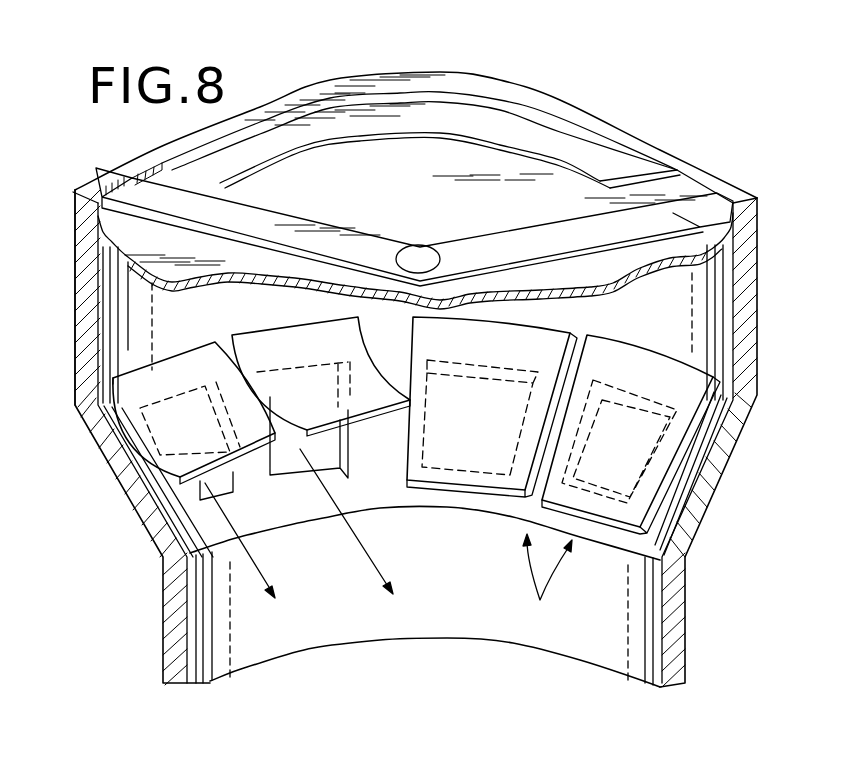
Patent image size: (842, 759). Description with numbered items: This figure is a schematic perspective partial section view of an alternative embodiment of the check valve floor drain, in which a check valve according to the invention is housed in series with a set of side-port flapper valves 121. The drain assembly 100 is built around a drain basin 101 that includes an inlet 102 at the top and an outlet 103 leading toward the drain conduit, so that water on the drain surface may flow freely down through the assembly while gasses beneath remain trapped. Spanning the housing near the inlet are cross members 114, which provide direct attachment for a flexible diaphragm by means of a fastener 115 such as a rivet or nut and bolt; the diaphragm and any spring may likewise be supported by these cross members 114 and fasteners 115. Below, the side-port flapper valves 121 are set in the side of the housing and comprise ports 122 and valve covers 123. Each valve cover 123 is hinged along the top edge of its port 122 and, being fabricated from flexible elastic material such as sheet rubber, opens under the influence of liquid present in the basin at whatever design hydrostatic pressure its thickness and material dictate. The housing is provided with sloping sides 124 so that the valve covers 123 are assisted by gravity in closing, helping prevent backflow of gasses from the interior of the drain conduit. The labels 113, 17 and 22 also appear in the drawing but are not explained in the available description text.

The drain assembly 100 is at (410, 367).
The drain basin 101 is at (74, 262).
The inlet 102 is at (590, 183).
The outlet 103 is at (667, 250).
The side support ledge 113 is at (700, 443).
The cross members 114 is at (271, 207).
The fastener 115 is at (422, 252).
The side-port flapper valves 121 is at (547, 582).
The ports 122 is at (297, 480).
The valve covers 123 is at (193, 386).
The sloping sides 124 is at (670, 507).
The direction arrow 17 is at (263, 575).
The support block 22 is at (205, 495).